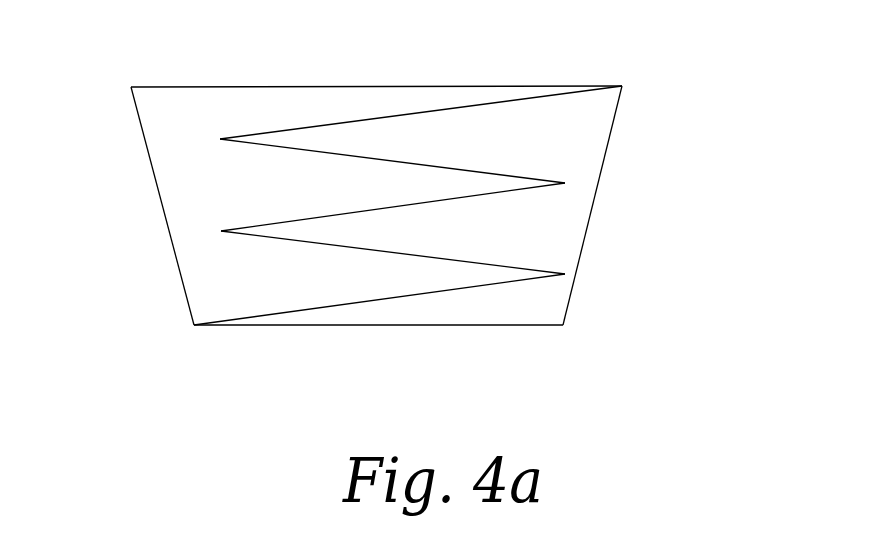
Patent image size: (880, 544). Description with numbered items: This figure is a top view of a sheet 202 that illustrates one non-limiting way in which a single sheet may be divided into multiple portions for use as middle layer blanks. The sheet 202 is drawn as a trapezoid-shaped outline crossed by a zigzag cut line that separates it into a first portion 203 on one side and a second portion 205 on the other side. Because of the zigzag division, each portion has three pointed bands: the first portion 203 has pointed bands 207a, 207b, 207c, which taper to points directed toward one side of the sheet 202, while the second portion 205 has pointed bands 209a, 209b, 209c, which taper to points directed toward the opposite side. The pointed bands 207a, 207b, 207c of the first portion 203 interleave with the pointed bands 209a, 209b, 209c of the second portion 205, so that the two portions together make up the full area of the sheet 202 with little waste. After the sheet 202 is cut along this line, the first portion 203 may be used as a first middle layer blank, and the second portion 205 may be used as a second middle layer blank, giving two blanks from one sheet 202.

The sheet 202 is at (652, 49).
The first portion 203 is at (145, 115).
The second portion 205 is at (582, 223).
The pointed band 207a is at (450, 90).
The pointed band 207b is at (513, 180).
The pointed band 207c is at (513, 274).
The pointed band 209a is at (277, 138).
The pointed band 209b is at (298, 225).
The pointed band 209c is at (292, 320).